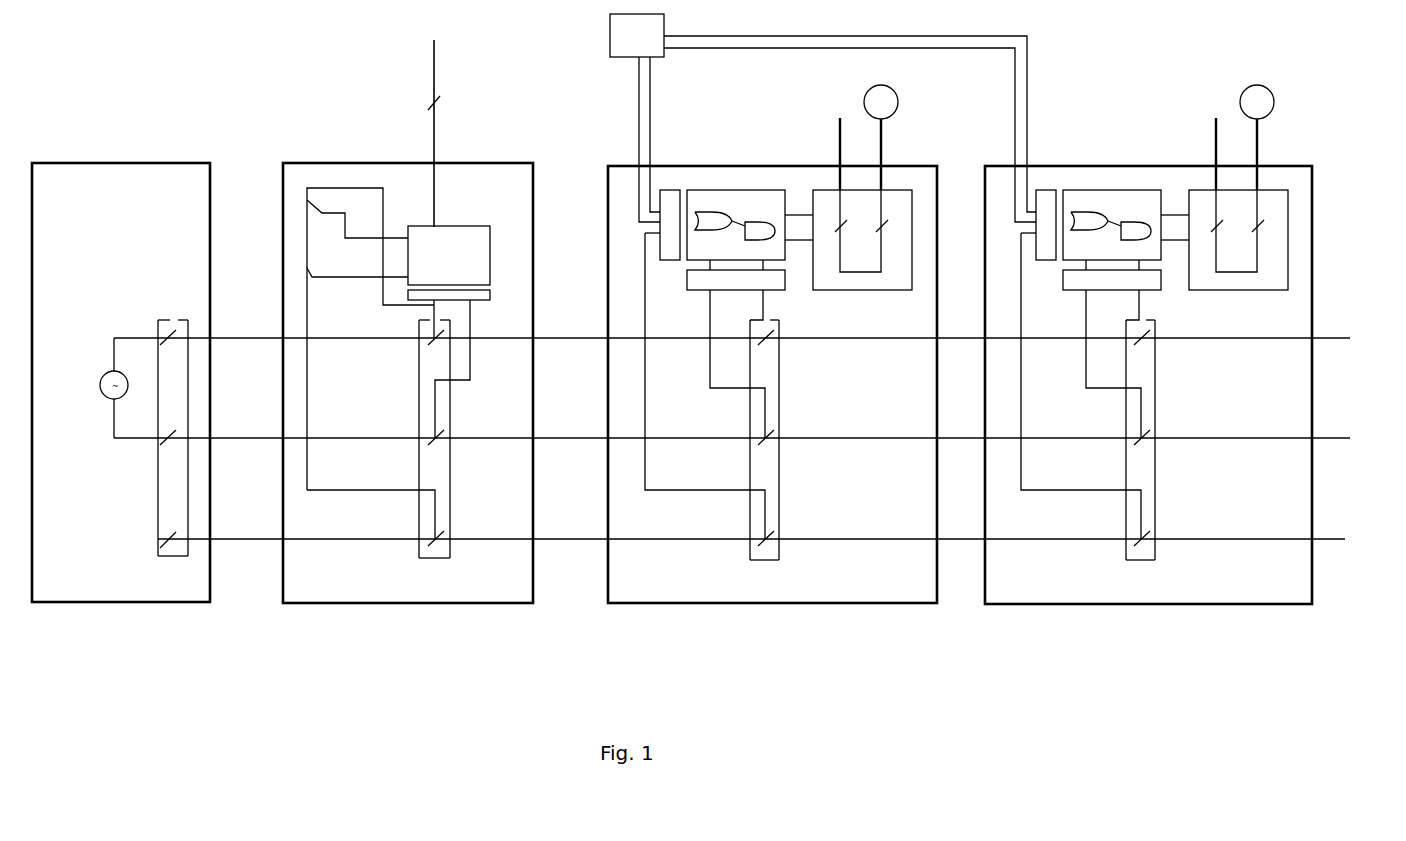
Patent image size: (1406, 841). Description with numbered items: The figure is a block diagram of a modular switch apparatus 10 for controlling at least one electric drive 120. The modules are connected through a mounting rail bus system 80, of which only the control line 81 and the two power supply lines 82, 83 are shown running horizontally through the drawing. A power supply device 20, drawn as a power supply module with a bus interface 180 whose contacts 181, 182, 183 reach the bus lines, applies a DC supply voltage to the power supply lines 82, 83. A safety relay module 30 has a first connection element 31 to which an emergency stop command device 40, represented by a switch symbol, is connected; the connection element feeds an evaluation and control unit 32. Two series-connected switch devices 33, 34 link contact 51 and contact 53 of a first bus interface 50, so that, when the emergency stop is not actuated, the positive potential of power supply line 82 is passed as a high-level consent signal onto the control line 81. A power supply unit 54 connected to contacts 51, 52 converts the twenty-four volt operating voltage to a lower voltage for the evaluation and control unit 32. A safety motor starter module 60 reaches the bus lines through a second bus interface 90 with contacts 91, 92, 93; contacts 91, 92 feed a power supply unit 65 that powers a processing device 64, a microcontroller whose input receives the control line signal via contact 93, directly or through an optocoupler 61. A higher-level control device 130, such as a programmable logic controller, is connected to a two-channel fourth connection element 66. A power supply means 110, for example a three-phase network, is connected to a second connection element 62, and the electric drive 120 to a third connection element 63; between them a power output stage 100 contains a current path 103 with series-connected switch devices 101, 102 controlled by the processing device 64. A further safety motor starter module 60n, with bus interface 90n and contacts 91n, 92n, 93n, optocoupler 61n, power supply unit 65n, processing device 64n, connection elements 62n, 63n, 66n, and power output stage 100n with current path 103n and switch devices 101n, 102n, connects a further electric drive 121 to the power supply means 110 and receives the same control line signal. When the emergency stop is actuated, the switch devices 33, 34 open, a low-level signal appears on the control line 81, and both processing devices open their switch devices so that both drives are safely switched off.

The modular switch apparatus 10 is at (268, 68).
The power supply device 20 is at (106, 606).
The safety relay module 30 is at (516, 608).
The first connection element 31 is at (440, 164).
The evaluation and control unit 32 is at (470, 226).
The switch device 33 is at (312, 212).
The switch device 34 is at (314, 272).
The emergency stop command device 40 is at (450, 94).
The first bus interface 50 is at (418, 560).
The contact 51 is at (424, 340).
The contact 52 is at (448, 440).
The contact 53 is at (448, 540).
The power supply unit 54 is at (490, 298).
The safety motor starter module 60 is at (920, 610).
The further safety motor starter module 60n is at (1292, 612).
The optocoupler 61 is at (676, 188).
The optocoupler 61n is at (1052, 188).
The second connection element 62 is at (838, 162).
The second connection element 62n is at (1214, 162).
The third connection element 63 is at (884, 162).
The third connection element 63n is at (1260, 162).
The processing device 64 is at (732, 188).
The processing device 64n is at (1108, 188).
The power supply unit 65 is at (688, 288).
The power supply unit 65n is at (1064, 288).
The fourth connection element 66 is at (655, 165).
The fourth connection element 66n is at (1031, 165).
The mounting rail bus system 80 is at (572, 490).
The control line 81 is at (1364, 565).
The power supply line 82 is at (1366, 318).
The power supply line 83 is at (1366, 418).
The second bus interface 90 is at (752, 561).
The bus interface 90n is at (1128, 561).
The contact 91 is at (778, 340).
The contact 91n is at (1154, 340).
The contact 92 is at (778, 440).
The contact 92n is at (1154, 440).
The contact 93 is at (778, 540).
The contact 93n is at (1154, 540).
The power output stage 100 is at (860, 291).
The power output stage 100n is at (1236, 291).
The switch device 101 is at (801, 225).
The switch device 101n is at (1179, 225).
The switch device 102 is at (801, 249).
The switch device 102n is at (1179, 249).
The current path 103 is at (871, 239).
The current path 103n is at (1247, 239).
The power supply means 110 is at (838, 124).
The electric drive 120 is at (897, 104).
The further electric drive 121 is at (1273, 104).
The higher-level control device 130 is at (656, 28).
The bus interface 180 is at (156, 322).
The contact 181 is at (170, 336).
The contact 182 is at (172, 437).
The contact 183 is at (160, 542).